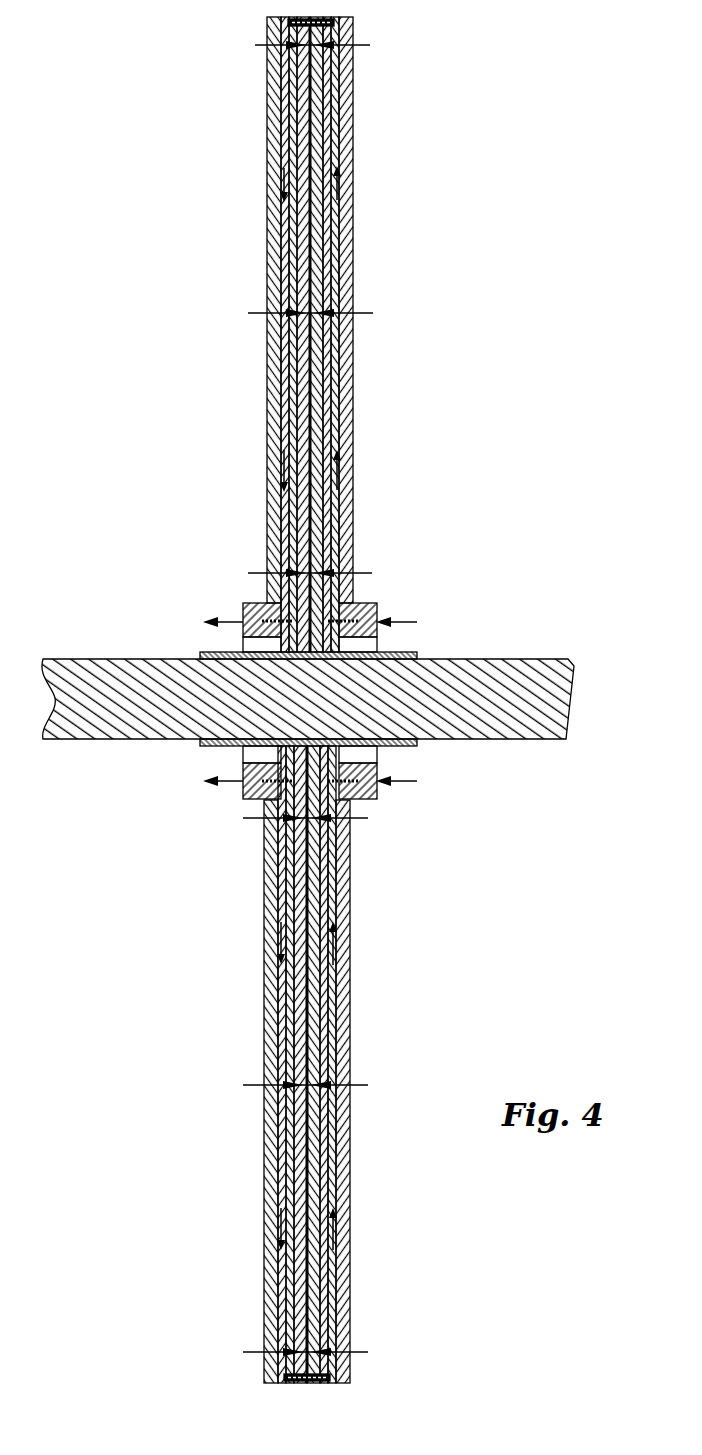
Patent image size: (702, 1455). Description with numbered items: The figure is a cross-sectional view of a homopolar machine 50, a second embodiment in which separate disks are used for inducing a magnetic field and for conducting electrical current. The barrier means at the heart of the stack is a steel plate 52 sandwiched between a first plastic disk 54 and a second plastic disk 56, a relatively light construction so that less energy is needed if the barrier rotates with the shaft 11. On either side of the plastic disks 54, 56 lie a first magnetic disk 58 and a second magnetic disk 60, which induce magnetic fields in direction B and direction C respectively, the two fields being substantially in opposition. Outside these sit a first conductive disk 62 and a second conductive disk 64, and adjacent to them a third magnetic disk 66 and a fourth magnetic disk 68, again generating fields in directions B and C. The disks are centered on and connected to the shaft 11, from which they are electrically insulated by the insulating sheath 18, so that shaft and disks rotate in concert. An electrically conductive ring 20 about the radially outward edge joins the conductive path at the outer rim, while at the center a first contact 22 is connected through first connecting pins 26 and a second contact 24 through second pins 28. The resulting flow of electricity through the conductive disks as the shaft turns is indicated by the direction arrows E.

The shaft 11 is at (505, 660).
The insulating sheath 18 is at (415, 658).
The electrically conductive ring 20 is at (330, 21).
The first contact 22 is at (245, 613).
The second contact 24 is at (375, 613).
The first connecting pins 26 is at (274, 596).
The second pins 28 is at (343, 596).
The homopolar machine 50 is at (526, 395).
The steel plate 52 is at (316, 112).
The first plastic disk 54 is at (292, 214).
The second plastic disk 56 is at (330, 214).
The first magnetic disk 58 is at (292, 286).
The second magnetic disk 60 is at (333, 286).
The first conductive disk 62 is at (286, 353).
The second conductive disk 64 is at (336, 352).
The third magnetic disk 66 is at (278, 415).
The fourth magnetic disk 68 is at (343, 416).
The direction B is at (297, 47).
The direction C is at (390, 47).
The direction arrows E is at (395, 480).